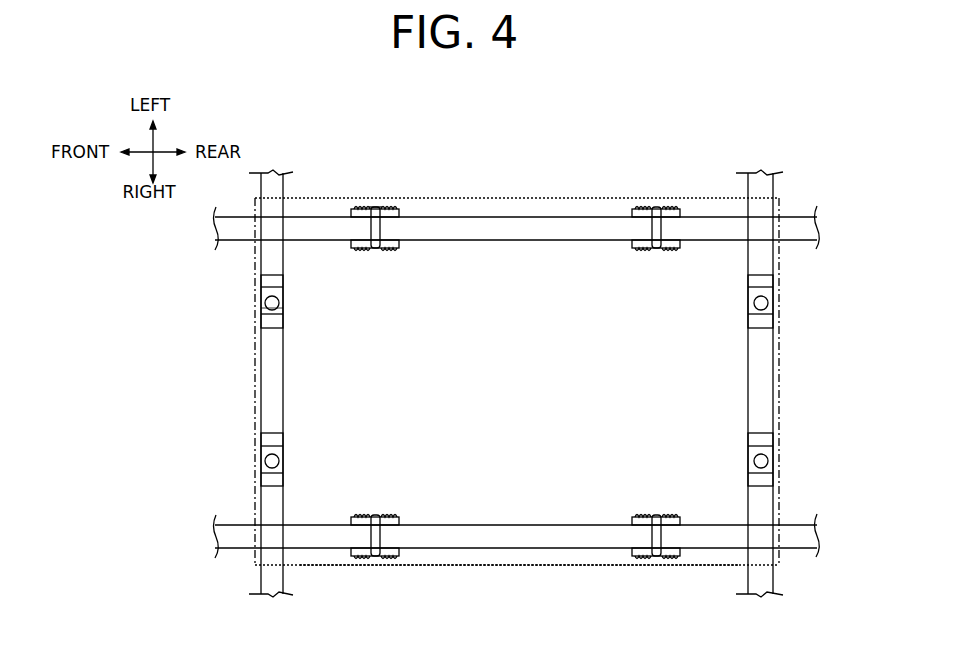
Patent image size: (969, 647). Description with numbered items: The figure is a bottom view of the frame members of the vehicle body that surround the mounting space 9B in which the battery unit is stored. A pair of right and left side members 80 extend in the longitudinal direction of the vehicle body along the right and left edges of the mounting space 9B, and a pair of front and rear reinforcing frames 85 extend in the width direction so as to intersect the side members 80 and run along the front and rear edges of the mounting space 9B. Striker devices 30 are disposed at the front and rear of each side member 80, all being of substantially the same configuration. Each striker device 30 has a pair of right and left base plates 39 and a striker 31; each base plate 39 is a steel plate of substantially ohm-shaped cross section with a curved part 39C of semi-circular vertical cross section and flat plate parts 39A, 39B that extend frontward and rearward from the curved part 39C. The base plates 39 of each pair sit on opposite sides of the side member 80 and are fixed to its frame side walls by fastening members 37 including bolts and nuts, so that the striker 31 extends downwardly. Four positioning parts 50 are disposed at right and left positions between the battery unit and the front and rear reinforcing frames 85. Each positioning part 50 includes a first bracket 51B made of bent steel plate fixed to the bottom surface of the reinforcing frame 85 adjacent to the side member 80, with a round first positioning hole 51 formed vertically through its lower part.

The reinforcing frame 85 is at (270, 183).
The side member 80 is at (209, 229).
The striker device 30 is at (517, 344).
The striker 31 is at (391, 228).
The fastening member 37 is at (356, 248).
The base plate 39 is at (375, 201).
The flat plate part 39A is at (351, 212).
The flat plate part 39B is at (402, 212).
The curved part 39C is at (381, 206).
The positioning part 50 is at (484, 380).
The first positioning hole 51 is at (265, 303).
The first bracket 51B is at (262, 312).
The mounting space 9B is at (514, 562).